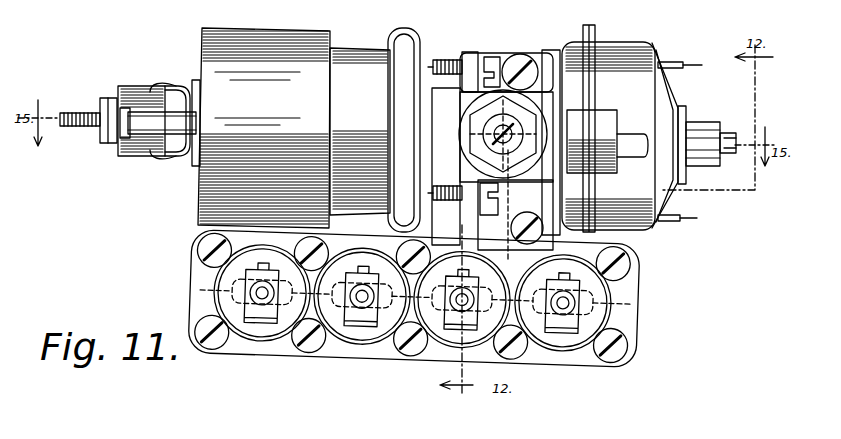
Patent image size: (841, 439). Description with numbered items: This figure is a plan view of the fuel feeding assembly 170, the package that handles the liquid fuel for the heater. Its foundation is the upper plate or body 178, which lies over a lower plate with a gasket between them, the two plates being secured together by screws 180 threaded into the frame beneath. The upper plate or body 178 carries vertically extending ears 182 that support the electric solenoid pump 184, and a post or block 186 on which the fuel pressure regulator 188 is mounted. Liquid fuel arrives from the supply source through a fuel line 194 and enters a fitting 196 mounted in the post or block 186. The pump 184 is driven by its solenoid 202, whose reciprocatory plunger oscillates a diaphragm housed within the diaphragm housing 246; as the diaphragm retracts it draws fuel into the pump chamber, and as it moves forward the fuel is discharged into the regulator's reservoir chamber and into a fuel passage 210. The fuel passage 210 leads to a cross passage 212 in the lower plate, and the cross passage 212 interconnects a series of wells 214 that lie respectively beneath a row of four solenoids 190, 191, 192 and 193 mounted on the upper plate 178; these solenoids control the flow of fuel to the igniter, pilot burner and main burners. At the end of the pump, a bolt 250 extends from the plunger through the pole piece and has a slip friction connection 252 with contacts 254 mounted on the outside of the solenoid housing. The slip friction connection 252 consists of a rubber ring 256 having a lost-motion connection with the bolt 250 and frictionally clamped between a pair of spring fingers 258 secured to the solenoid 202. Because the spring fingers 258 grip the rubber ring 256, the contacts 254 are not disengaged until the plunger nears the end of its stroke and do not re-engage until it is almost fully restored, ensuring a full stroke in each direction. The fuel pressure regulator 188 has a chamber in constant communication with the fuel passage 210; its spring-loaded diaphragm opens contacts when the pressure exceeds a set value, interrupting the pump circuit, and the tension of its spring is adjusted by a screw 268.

The fuel feeding assembly 170 is at (175, 212).
The upper plate or body 178 is at (548, 58).
The screws 180 is at (515, 58).
The ears 182 is at (468, 55).
The electric solenoid pump 184 is at (275, 114).
The post or block 186 is at (543, 105).
The fuel pressure regulator 188 is at (663, 100).
The solenoid 190 is at (573, 343).
The solenoid 191 is at (443, 317).
The solenoid 192 is at (363, 347).
The solenoid 193 is at (223, 280).
The fuel line 194 is at (632, 158).
The fitting 196 is at (483, 136).
The solenoid 202 is at (258, 33).
The fuel passage 210 is at (505, 193).
The cross passage 212 is at (336, 310).
The wells 214 is at (233, 295).
The diaphragm housing 246 is at (363, 55).
The bolt 250 is at (80, 128).
The slip friction connection 252 is at (104, 90).
The contacts 254 is at (125, 135).
The rubber ring 256 is at (135, 88).
The spring fingers 258 is at (160, 82).
The screw 268 is at (735, 133).